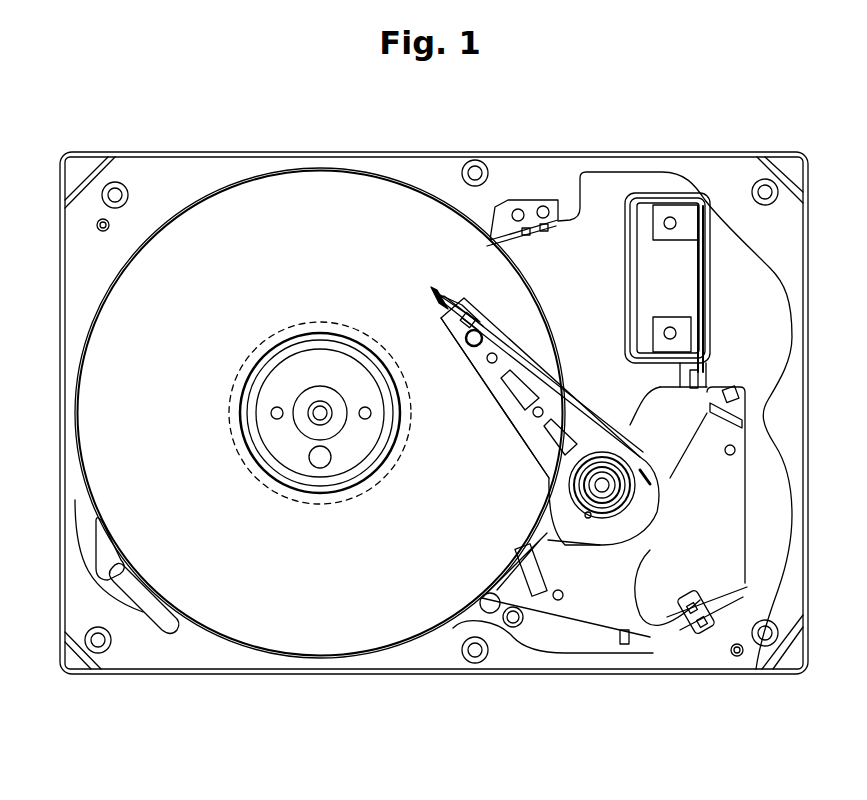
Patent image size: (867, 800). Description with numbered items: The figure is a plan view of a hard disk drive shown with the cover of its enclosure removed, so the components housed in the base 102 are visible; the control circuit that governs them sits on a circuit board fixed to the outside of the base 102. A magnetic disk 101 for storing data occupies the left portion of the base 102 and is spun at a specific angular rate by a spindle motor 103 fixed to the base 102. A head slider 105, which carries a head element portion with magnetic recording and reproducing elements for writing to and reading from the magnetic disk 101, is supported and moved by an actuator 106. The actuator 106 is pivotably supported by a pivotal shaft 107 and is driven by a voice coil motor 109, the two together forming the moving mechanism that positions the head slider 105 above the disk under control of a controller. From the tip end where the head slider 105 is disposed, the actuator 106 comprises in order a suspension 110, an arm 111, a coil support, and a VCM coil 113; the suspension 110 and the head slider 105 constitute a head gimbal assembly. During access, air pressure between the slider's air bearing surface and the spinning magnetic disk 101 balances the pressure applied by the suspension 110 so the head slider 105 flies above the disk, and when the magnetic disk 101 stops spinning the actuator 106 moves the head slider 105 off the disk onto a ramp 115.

The magnetic disk 101 is at (543, 297).
The base 102 is at (376, 676).
The spindle motor 103 is at (300, 505).
The head slider 105 is at (440, 293).
The actuator 106 is at (482, 384).
The pivotal shaft 107 is at (587, 488).
The voice coil motor 109 is at (548, 626).
The suspension 110 is at (453, 328).
The arm 111 is at (525, 432).
The VCM coil 113 is at (645, 545).
The ramp 115 is at (487, 237).